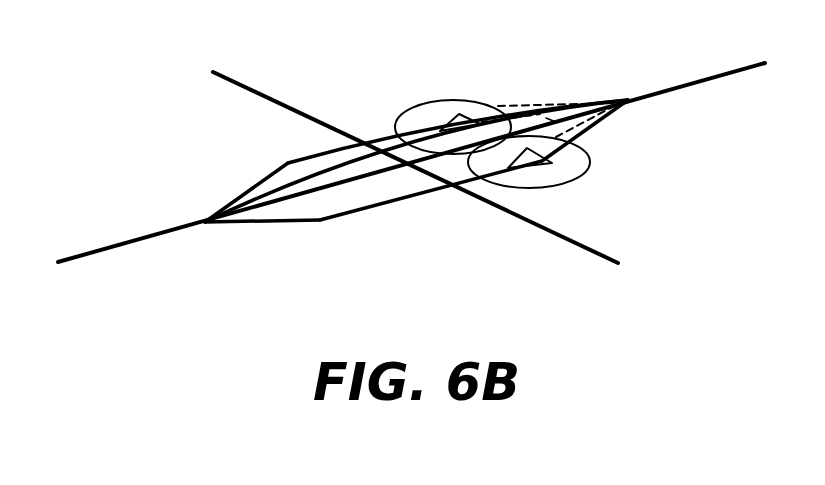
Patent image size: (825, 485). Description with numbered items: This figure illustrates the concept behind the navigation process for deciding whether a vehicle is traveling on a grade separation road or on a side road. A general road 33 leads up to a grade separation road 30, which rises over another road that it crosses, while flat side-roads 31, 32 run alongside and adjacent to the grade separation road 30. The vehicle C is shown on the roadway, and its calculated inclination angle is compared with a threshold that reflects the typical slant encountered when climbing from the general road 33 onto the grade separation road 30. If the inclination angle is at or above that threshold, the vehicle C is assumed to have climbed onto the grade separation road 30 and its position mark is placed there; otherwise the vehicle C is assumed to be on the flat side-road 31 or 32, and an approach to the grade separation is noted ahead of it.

The grade separation road 30 is at (305, 178).
The side-road 31 is at (338, 221).
The side-road 32 is at (251, 187).
The general road 33 is at (148, 240).
The vehicle C is at (463, 118).